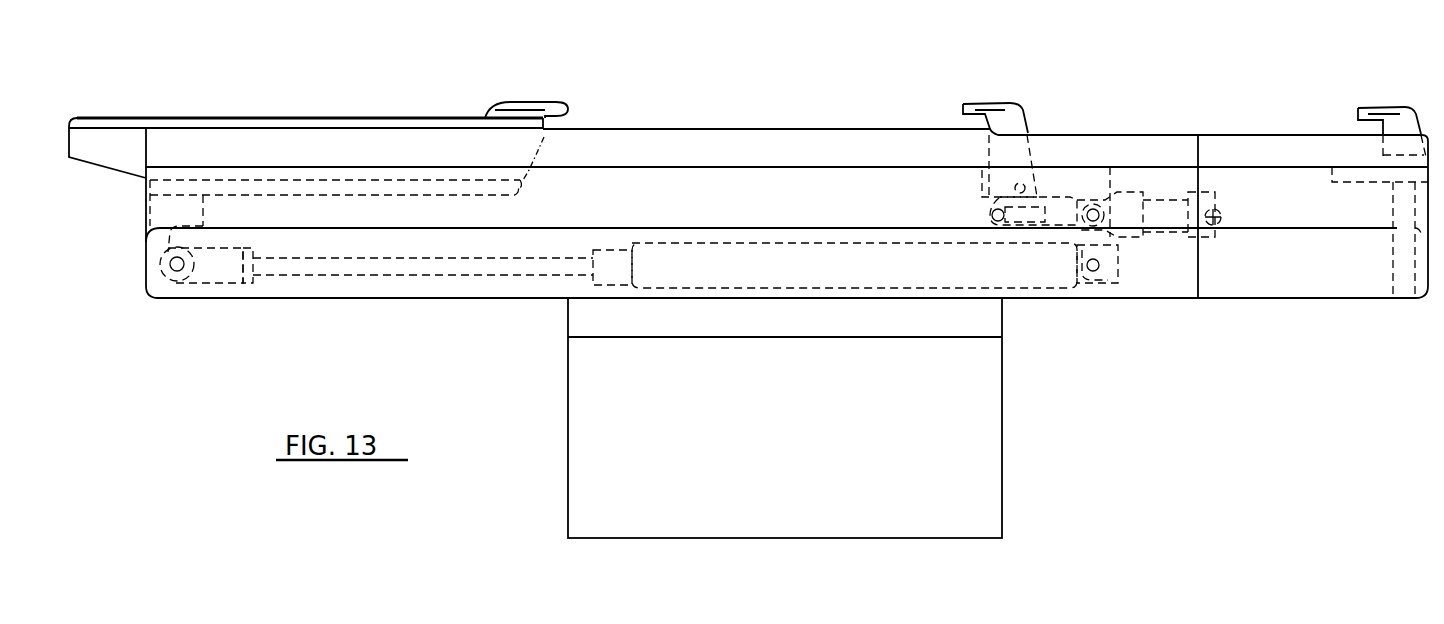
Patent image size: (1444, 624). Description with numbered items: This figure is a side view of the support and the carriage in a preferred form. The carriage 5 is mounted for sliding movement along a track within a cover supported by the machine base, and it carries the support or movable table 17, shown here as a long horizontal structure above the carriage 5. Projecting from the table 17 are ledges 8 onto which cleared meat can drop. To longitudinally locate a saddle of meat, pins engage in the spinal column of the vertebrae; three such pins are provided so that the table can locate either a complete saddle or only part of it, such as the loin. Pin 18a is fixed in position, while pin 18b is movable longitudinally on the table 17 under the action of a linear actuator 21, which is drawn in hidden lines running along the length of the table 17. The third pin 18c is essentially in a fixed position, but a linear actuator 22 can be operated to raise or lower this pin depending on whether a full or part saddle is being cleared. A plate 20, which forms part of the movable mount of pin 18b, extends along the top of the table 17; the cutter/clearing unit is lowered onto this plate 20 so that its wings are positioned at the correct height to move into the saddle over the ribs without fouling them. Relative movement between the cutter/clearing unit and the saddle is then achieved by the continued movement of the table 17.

The carriage 5 is at (992, 443).
The ledges 8 is at (317, 290).
The support or movable table 17 is at (735, 135).
The pin 18a is at (1373, 112).
The pin 18b is at (553, 103).
The pin 18c is at (976, 106).
The plate 20 is at (336, 118).
The linear actuator 21 is at (977, 283).
The linear actuator 22 is at (1168, 200).